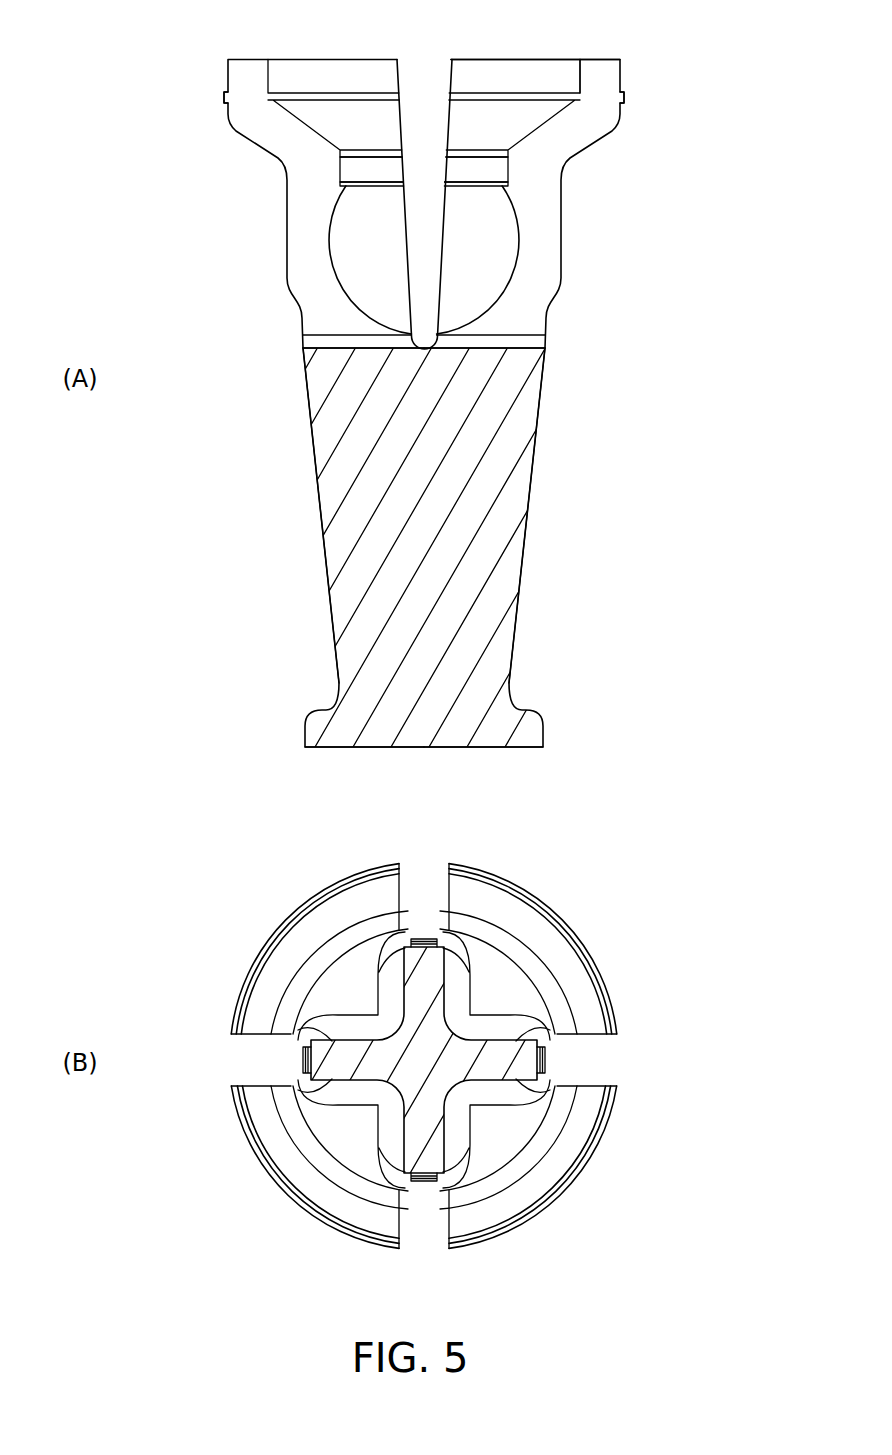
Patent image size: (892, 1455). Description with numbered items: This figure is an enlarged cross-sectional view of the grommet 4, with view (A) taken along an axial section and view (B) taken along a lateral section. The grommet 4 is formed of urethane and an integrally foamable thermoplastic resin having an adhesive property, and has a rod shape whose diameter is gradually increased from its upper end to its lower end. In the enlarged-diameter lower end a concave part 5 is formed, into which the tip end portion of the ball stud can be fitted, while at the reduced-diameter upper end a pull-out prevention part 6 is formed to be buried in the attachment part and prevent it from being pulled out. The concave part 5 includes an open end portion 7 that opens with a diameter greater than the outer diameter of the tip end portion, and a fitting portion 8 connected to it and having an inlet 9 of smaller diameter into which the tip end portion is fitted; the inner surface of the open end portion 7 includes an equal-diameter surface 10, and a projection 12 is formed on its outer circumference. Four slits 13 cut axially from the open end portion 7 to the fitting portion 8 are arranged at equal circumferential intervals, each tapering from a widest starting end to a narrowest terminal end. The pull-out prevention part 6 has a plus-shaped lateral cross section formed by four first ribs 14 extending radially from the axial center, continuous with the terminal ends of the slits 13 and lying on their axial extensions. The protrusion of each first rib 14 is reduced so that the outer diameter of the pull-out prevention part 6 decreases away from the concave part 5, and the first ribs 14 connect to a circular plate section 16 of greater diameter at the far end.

The grommet 4 is at (588, 346).
The concave part 5 is at (573, 228).
The pull-out prevention part 6 is at (543, 543).
The open end portion 7 is at (553, 58).
The fitting portion 8 is at (342, 264).
The inlet 9 is at (347, 163).
The equal-diameter surface 10 is at (483, 70).
The projection 12 is at (624, 97).
The slit 13 is at (399, 78).
The first rib 14 is at (316, 490).
The circular plate section 16 is at (535, 733).